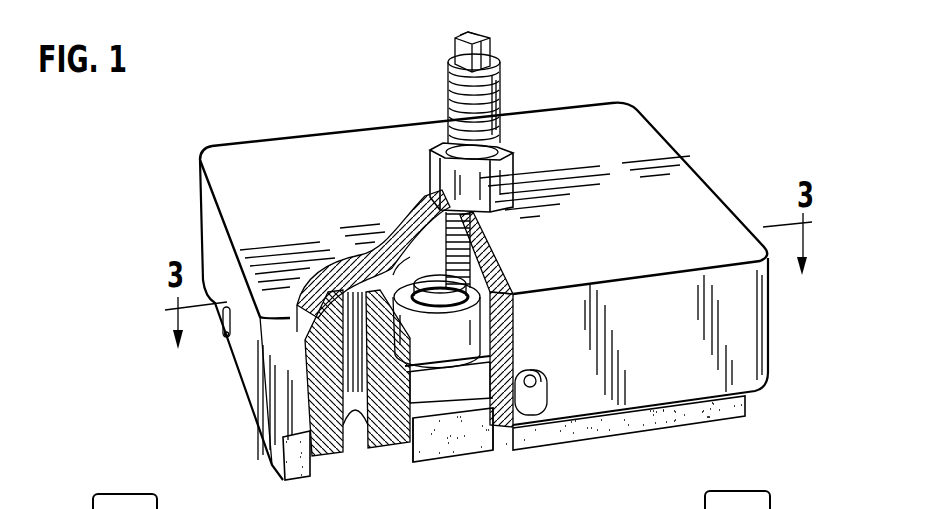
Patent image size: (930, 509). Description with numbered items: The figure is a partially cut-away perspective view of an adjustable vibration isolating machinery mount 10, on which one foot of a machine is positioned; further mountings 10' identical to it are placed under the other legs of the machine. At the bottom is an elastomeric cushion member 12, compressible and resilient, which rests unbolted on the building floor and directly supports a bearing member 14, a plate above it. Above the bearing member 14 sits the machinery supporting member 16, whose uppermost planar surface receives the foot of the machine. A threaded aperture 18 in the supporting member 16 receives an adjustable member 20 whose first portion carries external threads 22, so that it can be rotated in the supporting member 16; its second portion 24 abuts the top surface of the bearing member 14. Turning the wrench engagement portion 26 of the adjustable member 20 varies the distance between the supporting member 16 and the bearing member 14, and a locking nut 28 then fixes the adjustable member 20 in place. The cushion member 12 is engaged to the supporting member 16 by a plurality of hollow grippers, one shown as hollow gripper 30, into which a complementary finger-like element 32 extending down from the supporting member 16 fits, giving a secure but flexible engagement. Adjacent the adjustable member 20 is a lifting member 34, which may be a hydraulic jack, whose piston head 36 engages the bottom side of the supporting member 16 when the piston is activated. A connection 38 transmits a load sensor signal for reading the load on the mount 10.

The isolating machinery mount 10 is at (493, 254).
The isolating machinery mounting 10' is at (799, 497).
The elastomeric cushion member 12 is at (484, 437).
The bearing member 14 is at (438, 390).
The machinery supporting member 16 is at (632, 155).
The threaded aperture 18 is at (446, 258).
The adjustable member 20 is at (508, 85).
The external threads 22 is at (448, 95).
The second portion 24 is at (500, 283).
The wrench engagement portion 26 is at (487, 50).
The locking nut 28 is at (514, 170).
The hollow gripper 30 is at (330, 337).
The finger-like element 32 is at (364, 400).
The lifting member 34 is at (455, 345).
The piston head 36 is at (378, 230).
The connection 38 is at (452, 26).